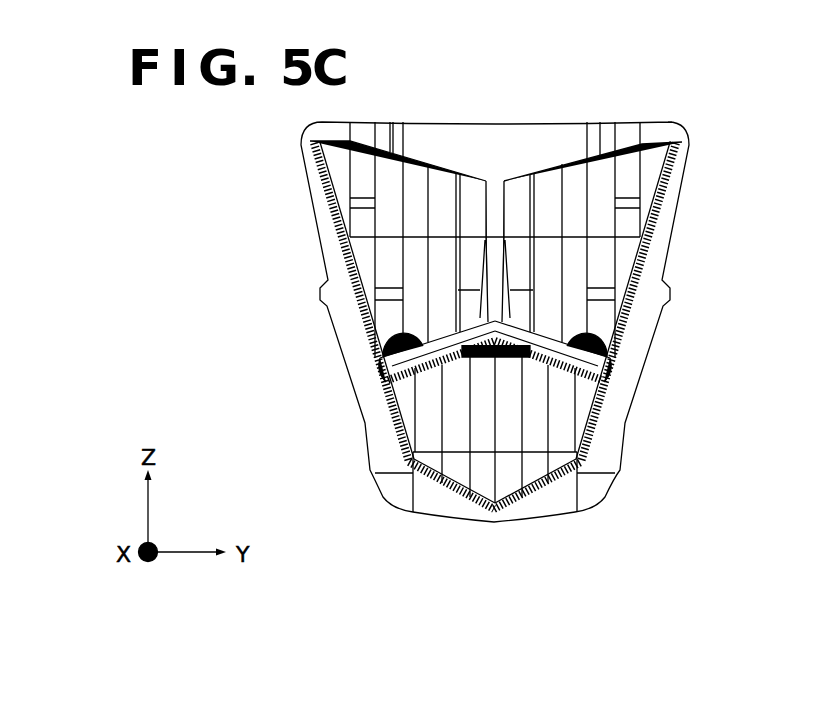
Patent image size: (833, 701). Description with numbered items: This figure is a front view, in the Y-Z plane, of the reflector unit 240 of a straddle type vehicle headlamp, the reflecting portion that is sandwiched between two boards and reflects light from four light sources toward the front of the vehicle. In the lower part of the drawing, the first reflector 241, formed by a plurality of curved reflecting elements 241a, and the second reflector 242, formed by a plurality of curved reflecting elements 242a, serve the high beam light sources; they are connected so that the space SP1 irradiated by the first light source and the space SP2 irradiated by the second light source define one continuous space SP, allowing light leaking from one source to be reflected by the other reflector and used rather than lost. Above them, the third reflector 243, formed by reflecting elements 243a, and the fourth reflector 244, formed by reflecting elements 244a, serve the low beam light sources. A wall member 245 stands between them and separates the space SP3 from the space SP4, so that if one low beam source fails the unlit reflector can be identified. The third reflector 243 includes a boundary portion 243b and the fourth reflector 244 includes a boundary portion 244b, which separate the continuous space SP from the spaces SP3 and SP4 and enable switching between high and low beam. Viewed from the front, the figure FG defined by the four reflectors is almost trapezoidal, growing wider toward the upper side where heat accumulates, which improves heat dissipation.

The reflector unit 240 is at (682, 98).
The figure FG is at (385, 150).
The wall member 245 is at (497, 193).
The third reflector 243 is at (330, 262).
The fourth reflector 244 is at (657, 262).
The reflecting elements 243a is at (368, 280).
The reflecting elements 244a is at (622, 278).
The boundary portion 243b is at (378, 357).
The boundary portion 244b is at (618, 352).
The first reflector 241 is at (431, 503).
The second reflector 242 is at (546, 505).
The reflecting elements 241a is at (413, 483).
The reflecting elements 242a is at (577, 476).
The space SP1 is at (455, 424).
The space SP2 is at (562, 422).
The space SP3 is at (390, 197).
The space SP4 is at (602, 185).
The continuous space SP is at (150, 406).